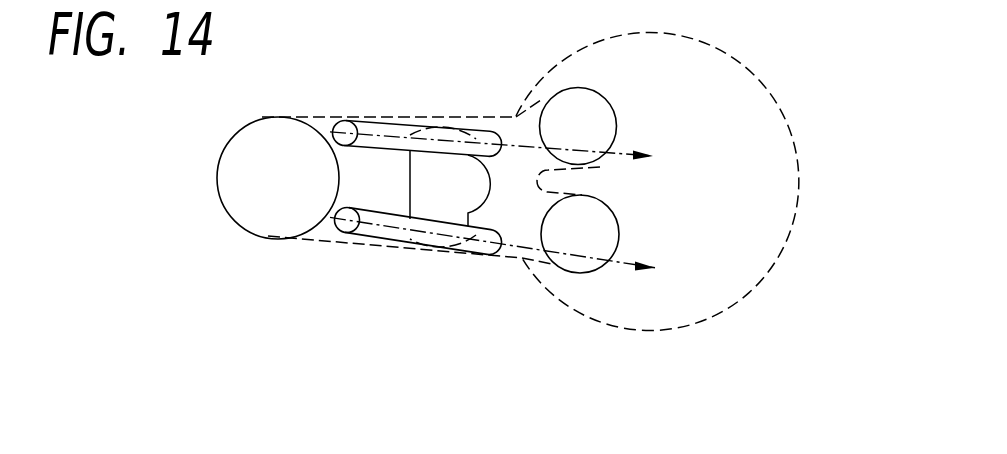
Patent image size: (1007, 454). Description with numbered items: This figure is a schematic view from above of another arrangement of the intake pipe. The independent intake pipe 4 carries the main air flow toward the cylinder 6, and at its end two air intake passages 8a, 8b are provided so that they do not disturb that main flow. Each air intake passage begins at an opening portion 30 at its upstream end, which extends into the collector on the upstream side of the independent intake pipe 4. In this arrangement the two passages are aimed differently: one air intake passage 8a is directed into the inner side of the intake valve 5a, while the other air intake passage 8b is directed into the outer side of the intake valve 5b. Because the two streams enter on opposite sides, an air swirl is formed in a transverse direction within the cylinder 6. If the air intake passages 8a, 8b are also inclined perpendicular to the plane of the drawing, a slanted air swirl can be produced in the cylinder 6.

The independent intake pipe 4 is at (253, 217).
The intake valve 5a is at (598, 113).
The intake valve 5b is at (600, 220).
The cylinder 6 is at (770, 90).
The air intake passage 8a is at (393, 127).
The air intake passage 8b is at (402, 237).
The opening portion 30 is at (345, 127).